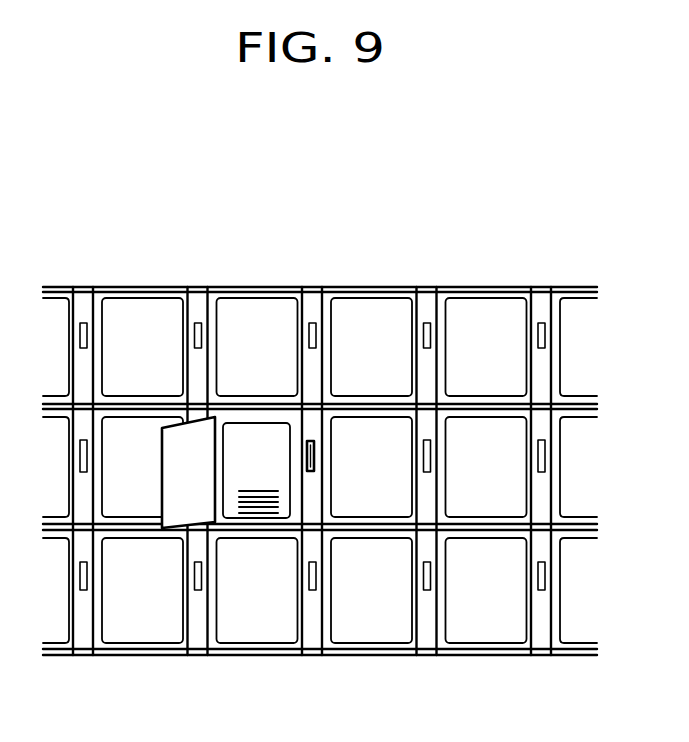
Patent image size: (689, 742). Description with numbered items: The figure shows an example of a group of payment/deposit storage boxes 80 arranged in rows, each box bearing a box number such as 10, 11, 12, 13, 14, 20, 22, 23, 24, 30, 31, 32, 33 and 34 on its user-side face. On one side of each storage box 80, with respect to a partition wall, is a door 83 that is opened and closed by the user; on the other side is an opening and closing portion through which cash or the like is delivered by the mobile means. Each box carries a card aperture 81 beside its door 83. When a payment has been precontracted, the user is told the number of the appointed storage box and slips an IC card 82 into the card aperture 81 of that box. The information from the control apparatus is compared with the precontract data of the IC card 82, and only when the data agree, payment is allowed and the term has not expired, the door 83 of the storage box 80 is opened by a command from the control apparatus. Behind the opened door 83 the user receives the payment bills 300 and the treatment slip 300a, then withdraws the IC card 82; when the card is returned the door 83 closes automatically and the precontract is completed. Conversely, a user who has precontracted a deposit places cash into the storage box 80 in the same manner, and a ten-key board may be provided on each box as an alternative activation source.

The locker compartment door 10 is at (142, 347).
The locker compartment door 11 is at (257, 347).
The locker compartment door 12 is at (371, 347).
The locker compartment door 13 is at (486, 347).
The locker compartment door 14 is at (580, 347).
The locker compartment door 20 is at (142, 467).
The locker compartment door 22 is at (371, 467).
The locker compartment door 23 is at (486, 467).
The locker compartment door 24 is at (580, 467).
The locker compartment door 30 is at (142, 590).
The locker compartment door 31 is at (257, 590).
The locker compartment door 32 is at (371, 590).
The locker compartment door 33 is at (486, 590).
The locker compartment door 34 is at (580, 590).
The payment/deposit storage box 80 is at (429, 303).
The card aperture 81 is at (313, 322).
The IC card 82 is at (315, 458).
The door 83 is at (175, 513).
The payment bills 300 is at (252, 461).
The treatment slip 300a is at (258, 491).